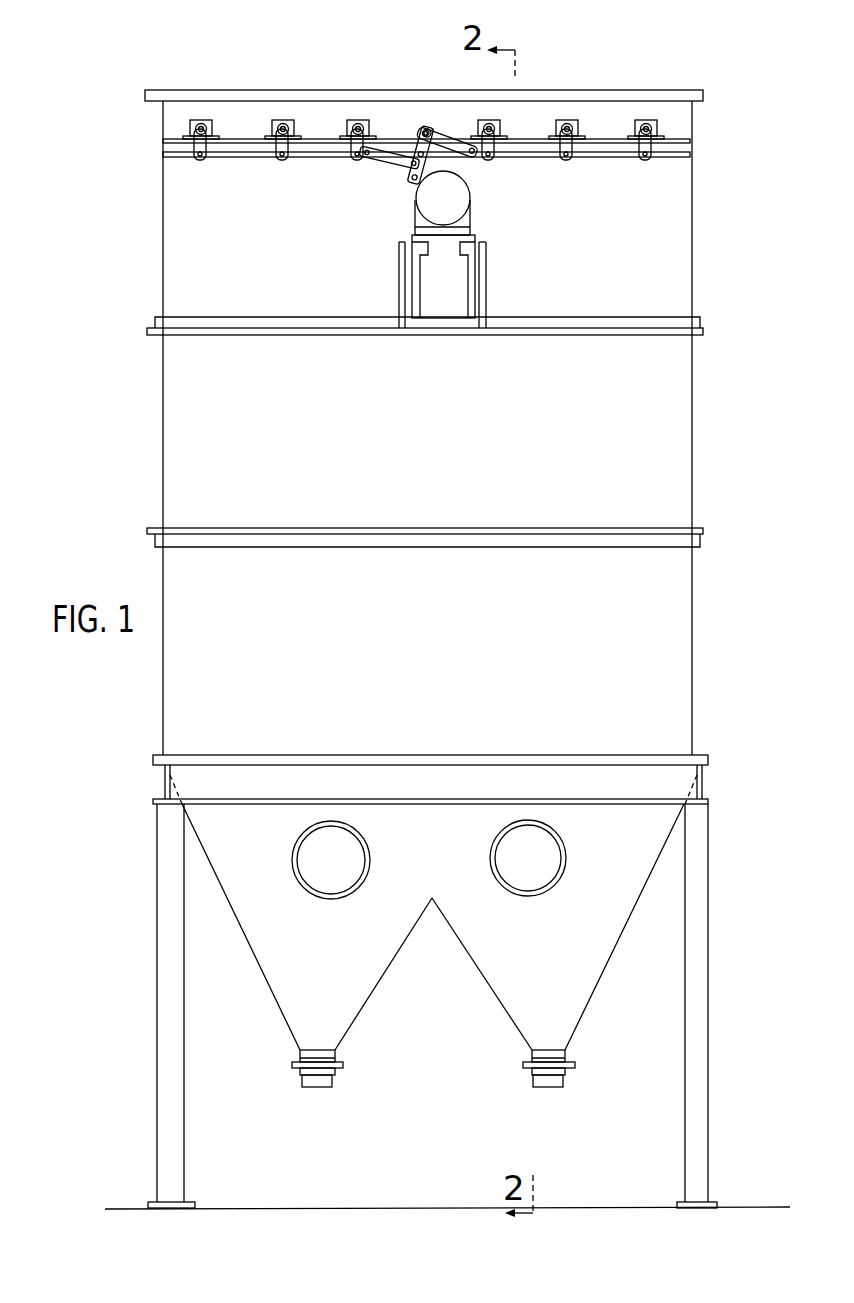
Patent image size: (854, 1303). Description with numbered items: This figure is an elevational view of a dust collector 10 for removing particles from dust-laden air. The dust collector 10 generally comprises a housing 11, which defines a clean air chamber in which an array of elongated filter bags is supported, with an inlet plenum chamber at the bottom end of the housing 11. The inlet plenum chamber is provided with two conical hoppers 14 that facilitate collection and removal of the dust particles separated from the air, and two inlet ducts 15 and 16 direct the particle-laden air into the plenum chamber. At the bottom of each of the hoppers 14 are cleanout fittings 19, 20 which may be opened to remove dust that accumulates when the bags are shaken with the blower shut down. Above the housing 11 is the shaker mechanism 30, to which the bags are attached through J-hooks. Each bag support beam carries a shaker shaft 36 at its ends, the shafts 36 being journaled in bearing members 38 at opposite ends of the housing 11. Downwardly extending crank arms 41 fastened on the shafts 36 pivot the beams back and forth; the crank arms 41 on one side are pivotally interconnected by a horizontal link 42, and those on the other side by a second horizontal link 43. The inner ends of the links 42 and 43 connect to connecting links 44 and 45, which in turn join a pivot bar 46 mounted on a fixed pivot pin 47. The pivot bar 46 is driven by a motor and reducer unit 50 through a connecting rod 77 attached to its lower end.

The dust collector 10 is at (664, 46).
The housing 11 is at (700, 456).
The conical hoppers 14 is at (358, 1015).
The inlet duct 15 is at (296, 846).
The inlet duct 16 is at (567, 851).
The cleanout fitting 19 is at (332, 1080).
The cleanout fitting 20 is at (563, 1080).
The shaker mechanism 30 is at (536, 199).
The shaker shaft 36 is at (204, 124).
The bearing members 38 is at (352, 120).
The crank arm 41 is at (290, 154).
The horizontal link 42 is at (233, 157).
The second horizontal link 43 is at (605, 157).
The connecting link 44 is at (402, 166).
The connecting link 45 is at (450, 138).
The pivot bar 46 is at (420, 140).
The fixed pivot pin 47 is at (428, 128).
The motor and reducer unit 50 is at (440, 215).
The connecting rod 77 is at (420, 174).